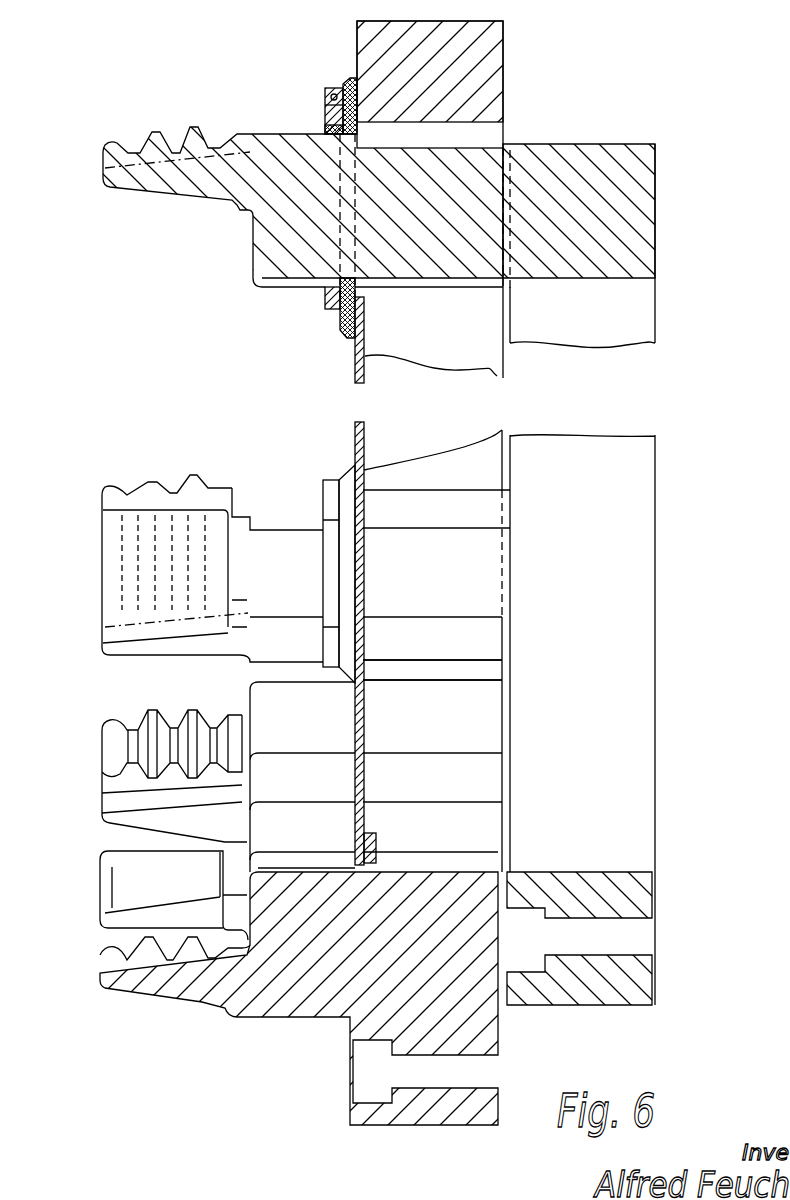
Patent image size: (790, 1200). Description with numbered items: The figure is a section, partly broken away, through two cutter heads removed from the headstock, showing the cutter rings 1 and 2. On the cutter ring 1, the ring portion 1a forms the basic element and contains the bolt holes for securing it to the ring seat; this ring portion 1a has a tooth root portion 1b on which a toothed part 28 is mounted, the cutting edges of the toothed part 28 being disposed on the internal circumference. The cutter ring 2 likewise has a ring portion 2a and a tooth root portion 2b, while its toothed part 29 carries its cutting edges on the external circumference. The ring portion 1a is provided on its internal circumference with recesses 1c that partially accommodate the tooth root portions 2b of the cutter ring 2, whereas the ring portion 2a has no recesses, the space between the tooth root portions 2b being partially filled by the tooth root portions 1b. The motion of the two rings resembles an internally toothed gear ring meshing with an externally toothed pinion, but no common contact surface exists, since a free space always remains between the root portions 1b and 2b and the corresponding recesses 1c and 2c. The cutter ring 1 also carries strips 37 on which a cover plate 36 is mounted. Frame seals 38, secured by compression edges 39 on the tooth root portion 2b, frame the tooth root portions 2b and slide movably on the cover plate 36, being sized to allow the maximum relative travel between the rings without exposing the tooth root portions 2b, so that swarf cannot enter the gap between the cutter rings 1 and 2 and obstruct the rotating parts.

The cutter ring 1 is at (253, 1017).
The ring portion 1a is at (468, 72).
The tooth root portion 1b is at (453, 712).
The recesses 1c is at (428, 782).
The cutter ring 2 is at (272, 133).
The ring portion 2a is at (575, 296).
The tooth root portion 2b is at (437, 207).
The recess 2c is at (468, 670).
The toothed part 28 is at (143, 755).
The toothed part 29 is at (168, 170).
The cover plate 36 is at (358, 369).
The strips 37 is at (370, 843).
The frame seals 38 is at (343, 325).
The compression edges 39 is at (325, 300).